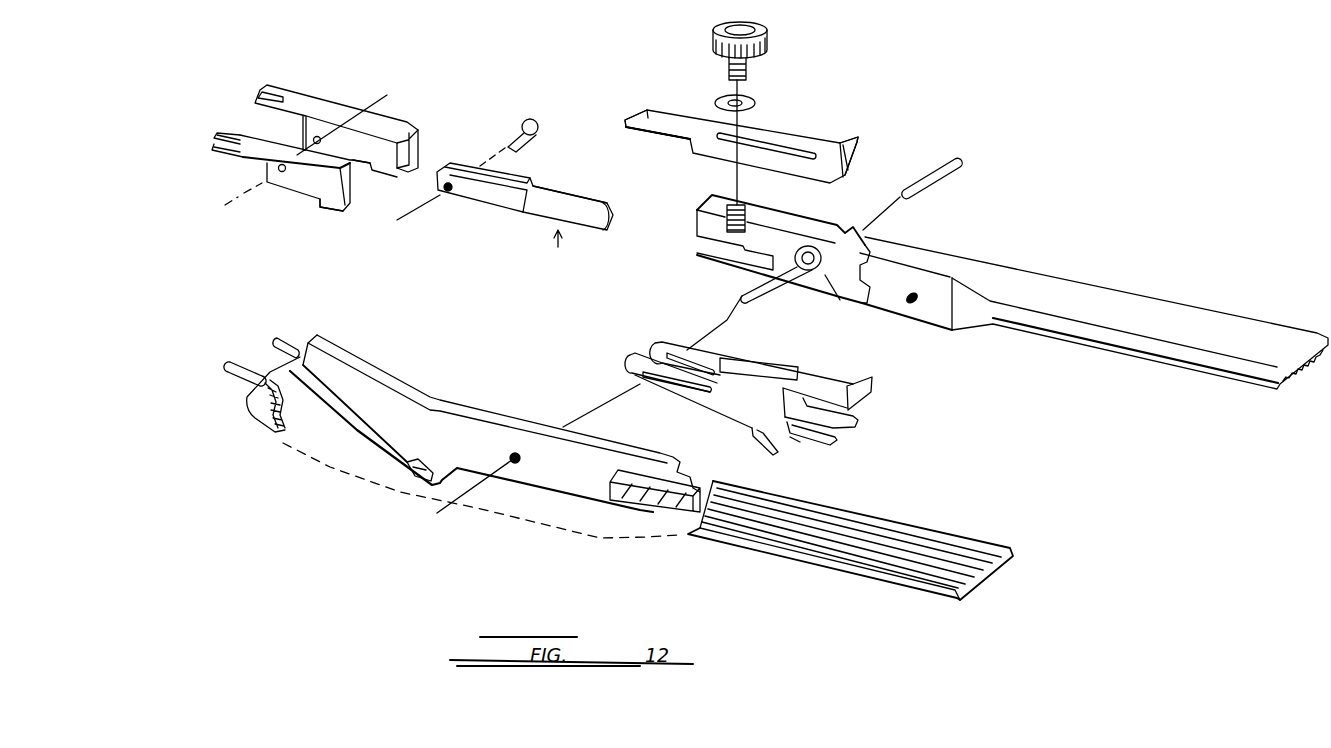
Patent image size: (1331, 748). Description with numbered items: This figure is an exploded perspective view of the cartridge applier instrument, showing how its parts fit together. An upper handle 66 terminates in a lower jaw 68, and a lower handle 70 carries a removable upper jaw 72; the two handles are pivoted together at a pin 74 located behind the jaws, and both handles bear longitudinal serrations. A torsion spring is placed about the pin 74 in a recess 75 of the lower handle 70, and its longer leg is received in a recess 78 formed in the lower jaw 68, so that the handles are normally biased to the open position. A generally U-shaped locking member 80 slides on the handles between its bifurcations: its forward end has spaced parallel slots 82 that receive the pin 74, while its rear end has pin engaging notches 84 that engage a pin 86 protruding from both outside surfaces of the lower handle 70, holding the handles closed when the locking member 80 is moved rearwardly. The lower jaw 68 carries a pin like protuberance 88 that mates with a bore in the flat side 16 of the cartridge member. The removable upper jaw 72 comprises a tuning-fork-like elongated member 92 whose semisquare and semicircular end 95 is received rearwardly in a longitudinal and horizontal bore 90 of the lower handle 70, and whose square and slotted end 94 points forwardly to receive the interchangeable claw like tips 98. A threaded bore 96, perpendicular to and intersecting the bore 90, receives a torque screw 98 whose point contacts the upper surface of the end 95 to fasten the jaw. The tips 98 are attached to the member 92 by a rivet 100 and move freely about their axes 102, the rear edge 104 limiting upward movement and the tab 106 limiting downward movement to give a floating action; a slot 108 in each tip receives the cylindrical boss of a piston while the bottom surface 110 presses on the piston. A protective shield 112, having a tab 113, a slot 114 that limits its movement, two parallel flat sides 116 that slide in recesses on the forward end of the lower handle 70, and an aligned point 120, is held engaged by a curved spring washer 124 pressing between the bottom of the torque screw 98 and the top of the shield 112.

The flat side 16 is at (757, 305).
The upper handle 66 is at (920, 530).
The lower jaw 68 is at (310, 445).
The lower handle 70 is at (1150, 312).
The removable upper jaw 72 is at (558, 247).
The pin 74 is at (963, 160).
The recess 75 is at (823, 290).
The recess 78 is at (421, 480).
The locking member 80 is at (772, 395).
The spaced parallel slots 82 is at (640, 377).
The pin engaging notches 84 is at (803, 445).
The pin 86 is at (917, 294).
The pin like protuberance 88 is at (240, 375).
The longitudinal and horizontal bore 90 is at (700, 240).
The elongated member 92 is at (503, 213).
The square and slotted end 94 is at (443, 192).
The semisquare and semicircular end 95 is at (563, 193).
The threaded bore 96 is at (712, 212).
The torque screw / claw like tips 98 is at (300, 187).
The rivet 100 is at (535, 120).
The axes 102 is at (387, 95).
The rear edge 104 is at (355, 160).
The tab 106 is at (337, 213).
The slot 108 is at (232, 142).
The bottom surface 110 is at (227, 153).
The protective shield 112 is at (852, 136).
The tab 113 is at (860, 150).
The slot 114 is at (770, 137).
The parallel flat sides 116 is at (792, 170).
The point 120 is at (647, 108).
The curved spring washer 124 is at (760, 98).